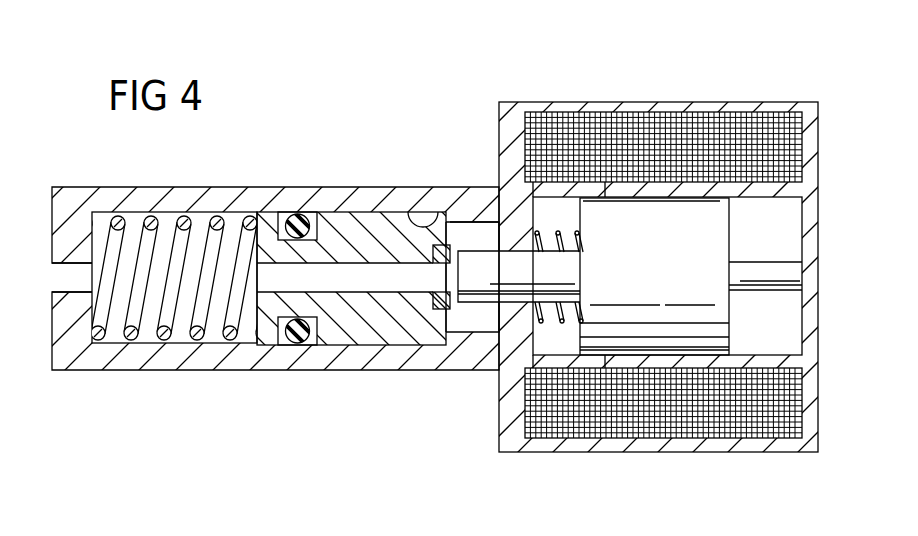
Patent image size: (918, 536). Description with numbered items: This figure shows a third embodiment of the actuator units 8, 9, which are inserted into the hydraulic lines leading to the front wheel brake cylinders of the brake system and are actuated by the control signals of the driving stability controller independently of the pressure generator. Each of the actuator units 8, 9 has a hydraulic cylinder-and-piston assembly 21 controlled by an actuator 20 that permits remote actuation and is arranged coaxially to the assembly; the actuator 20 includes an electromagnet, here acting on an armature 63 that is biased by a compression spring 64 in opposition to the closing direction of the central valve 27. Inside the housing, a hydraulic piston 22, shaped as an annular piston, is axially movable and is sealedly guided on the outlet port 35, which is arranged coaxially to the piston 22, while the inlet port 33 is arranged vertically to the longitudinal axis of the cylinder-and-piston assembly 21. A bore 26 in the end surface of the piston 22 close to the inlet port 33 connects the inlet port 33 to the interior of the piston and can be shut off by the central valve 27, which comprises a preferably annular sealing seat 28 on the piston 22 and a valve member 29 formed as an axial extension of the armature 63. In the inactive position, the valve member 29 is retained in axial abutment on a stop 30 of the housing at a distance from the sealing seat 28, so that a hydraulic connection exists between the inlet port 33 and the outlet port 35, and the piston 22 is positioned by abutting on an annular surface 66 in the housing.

The actuator unit 8 is at (636, 100).
The actuator unit 9 is at (663, 403).
The actuator 20 is at (773, 100).
The hydraulic cylinder-and-piston assembly 21 is at (262, 186).
The hydraulic piston 22 is at (337, 333).
The bore 26 is at (376, 290).
The central valve 27 is at (457, 222).
The sealing seat 28 is at (443, 309).
The valve member 29 is at (480, 260).
The stop 30 is at (790, 268).
The inlet port 33 is at (473, 360).
The outlet port 35 is at (62, 275).
The armature 63 is at (677, 282).
The compression spring 64 is at (563, 230).
The annular surface 66 is at (408, 212).